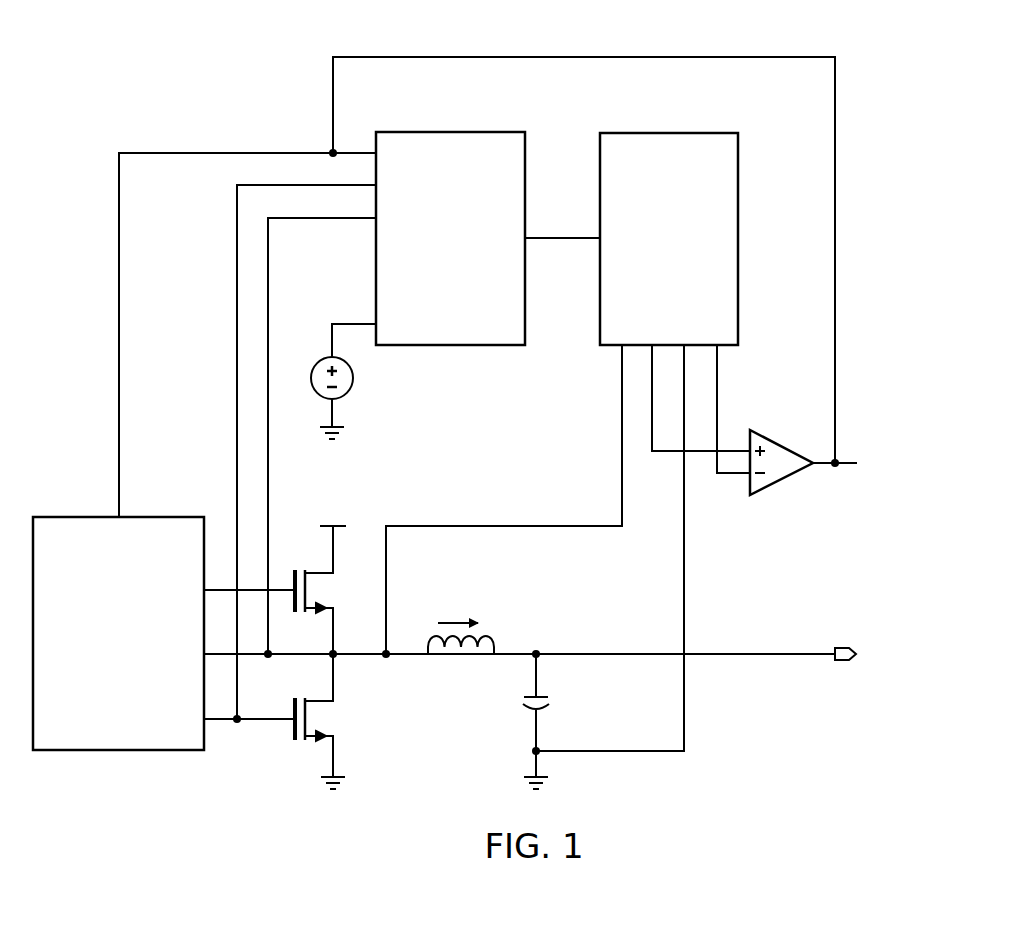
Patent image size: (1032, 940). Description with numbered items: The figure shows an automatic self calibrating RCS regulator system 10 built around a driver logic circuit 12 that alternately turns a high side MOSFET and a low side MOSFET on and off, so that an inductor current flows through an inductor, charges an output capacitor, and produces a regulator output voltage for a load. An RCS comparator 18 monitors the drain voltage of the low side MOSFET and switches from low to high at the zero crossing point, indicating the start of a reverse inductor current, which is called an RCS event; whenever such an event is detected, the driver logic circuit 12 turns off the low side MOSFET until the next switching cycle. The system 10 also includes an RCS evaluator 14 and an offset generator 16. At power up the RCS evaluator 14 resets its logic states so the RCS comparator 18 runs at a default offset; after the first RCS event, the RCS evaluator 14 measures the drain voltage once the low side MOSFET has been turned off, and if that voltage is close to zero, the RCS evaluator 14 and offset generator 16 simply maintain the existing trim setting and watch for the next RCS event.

The automatic self calibrating RCS regulator system 10 is at (258, 86).
The driver logic circuit 12 is at (118, 751).
The RCS evaluator 14 is at (452, 131).
The offset generator 16 is at (656, 271).
The RCS comparator 18 is at (782, 482).